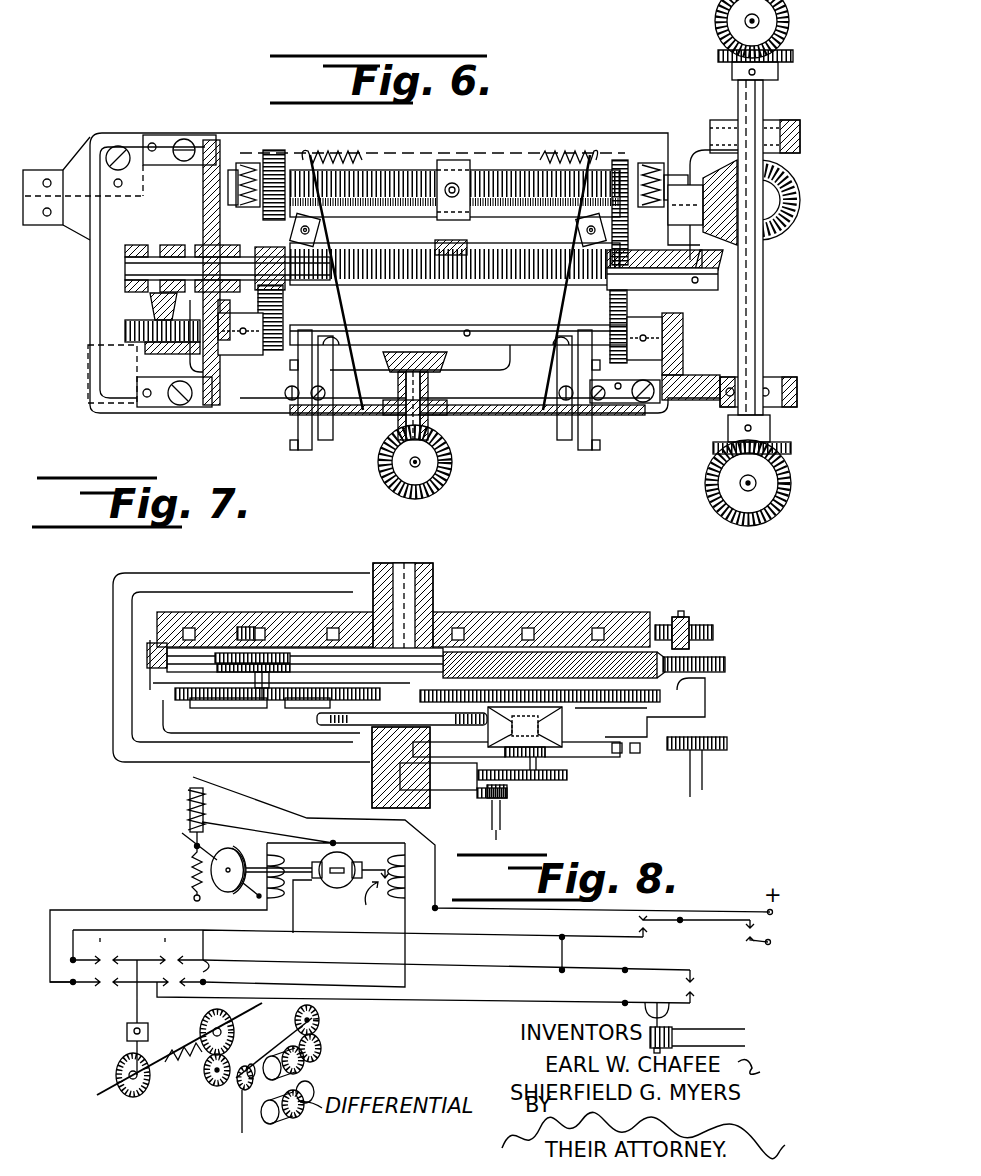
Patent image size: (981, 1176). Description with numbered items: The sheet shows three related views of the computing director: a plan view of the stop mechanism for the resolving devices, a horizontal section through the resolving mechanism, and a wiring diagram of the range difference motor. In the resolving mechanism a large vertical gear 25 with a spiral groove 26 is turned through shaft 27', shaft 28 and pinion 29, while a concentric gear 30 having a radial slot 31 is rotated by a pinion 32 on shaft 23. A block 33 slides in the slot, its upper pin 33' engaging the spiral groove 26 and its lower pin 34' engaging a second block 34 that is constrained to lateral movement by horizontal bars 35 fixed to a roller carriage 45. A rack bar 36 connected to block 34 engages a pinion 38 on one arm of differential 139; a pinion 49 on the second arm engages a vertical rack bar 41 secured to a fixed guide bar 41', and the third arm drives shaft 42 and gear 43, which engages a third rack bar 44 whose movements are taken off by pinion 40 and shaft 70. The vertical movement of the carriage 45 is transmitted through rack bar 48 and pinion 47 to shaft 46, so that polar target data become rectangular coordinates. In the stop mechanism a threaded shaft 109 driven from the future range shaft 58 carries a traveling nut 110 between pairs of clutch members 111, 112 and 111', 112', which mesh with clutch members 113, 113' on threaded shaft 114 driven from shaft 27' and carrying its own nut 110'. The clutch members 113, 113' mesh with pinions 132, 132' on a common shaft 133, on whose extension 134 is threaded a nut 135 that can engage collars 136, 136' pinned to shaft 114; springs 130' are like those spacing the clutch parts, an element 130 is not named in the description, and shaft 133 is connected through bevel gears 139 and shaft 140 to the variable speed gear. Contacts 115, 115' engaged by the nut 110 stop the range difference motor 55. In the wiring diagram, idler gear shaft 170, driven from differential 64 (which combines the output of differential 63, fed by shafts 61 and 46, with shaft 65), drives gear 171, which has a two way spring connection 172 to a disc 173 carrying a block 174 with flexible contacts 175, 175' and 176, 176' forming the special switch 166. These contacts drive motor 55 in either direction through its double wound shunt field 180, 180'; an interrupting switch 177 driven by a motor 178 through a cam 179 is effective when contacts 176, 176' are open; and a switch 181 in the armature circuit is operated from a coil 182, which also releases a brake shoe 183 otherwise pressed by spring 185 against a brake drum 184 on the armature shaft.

In FIG. 6, the bracket plate 130 is at (188, 249).
In FIG. 6, the clutch member 112' is at (252, 157).
In FIG. 6, the clutch member 111' is at (278, 154).
In FIG. 6, the threaded shaft 109 is at (366, 208).
In FIG. 6, the nut 110 is at (468, 157).
In FIG. 6, the threaded shaft 114 is at (525, 262).
In FIG. 6, the traveling nut 110' is at (474, 238).
In FIG. 6, the clutch member 112 is at (640, 185).
In FIG. 6, the clutch member 111 is at (640, 150).
In FIG. 6, the collar 136 is at (216, 254).
In FIG. 6, the collar 136' is at (200, 252).
In FIG. 6, the springs 130' is at (479, 312).
In FIG. 6, the pinion 132' is at (250, 329).
In FIG. 6, the nut 135 is at (150, 305).
In FIG. 6, the extension of shaft 133 134 is at (132, 350).
In FIG. 6, the common shaft 133 is at (388, 328).
In FIG. 6, the clutch member 113' is at (282, 316).
In FIG. 6, the shaft 140 is at (410, 468).
In FIG. 6, the contact 115' is at (324, 401).
In FIG. 8, the contact 115' is at (750, 932).
In FIG. 6, the contact 115 is at (573, 400).
In FIG. 8, the contact 115 is at (669, 929).
In FIG. 6, the clutch member 113 is at (640, 306).
In FIG. 6, the pinion 132 is at (650, 397).
In FIG. 6, the range shaft 58 is at (762, 193).
In FIG. 6, the shaft 27' is at (725, 263).
In FIG. 7, the spiral groove 26 is at (522, 626).
In FIG. 7, the fixed guide bar 41' is at (377, 685).
In FIG. 7, the disc or gear 30 is at (593, 655).
In FIG. 7, the radial slot 31 is at (180, 650).
In FIG. 7, the upper pin 33' is at (274, 593).
In FIG. 7, the block 33 is at (236, 627).
In FIG. 7, the block 34 is at (230, 695).
In FIG. 7, the lower pin 34' is at (241, 699).
In FIG. 7, the horizontal bar 35 is at (153, 685).
In FIG. 7, the rack bar 36 is at (302, 700).
In FIG. 7, the roller carriage 45 is at (262, 676).
In FIG. 7, the vertical rack bar 41 is at (468, 751).
In FIG. 7, the pinion 38 is at (562, 712).
In FIG. 7, the pinion 49 is at (545, 752).
In FIG. 7, the gear 43 is at (566, 776).
In FIG. 7, the shaft 42 is at (522, 757).
In FIG. 7, the differential 139 is at (545, 760).
In FIG. 7, the rack bar 48 is at (658, 740).
In FIG. 7, the pinion 47 is at (703, 755).
In FIG. 7, the shaft 46 is at (692, 782).
In FIG. 7, the shaft 23 is at (706, 686).
In FIG. 7, the pinion 29 is at (712, 630).
In FIG. 7, the disc or gear 25 is at (682, 617).
In FIG. 7, the shaft 28 is at (690, 620).
In FIG. 7, the pinion 32 is at (726, 666).
In FIG. 7, the rack bar 44 is at (478, 790).
In FIG. 7, the shaft 70 is at (490, 816).
In FIG. 7, the pinion 40 is at (507, 814).
In FIG. 8, the coil 182 is at (205, 806).
In FIG. 8, the spring 185 is at (192, 866).
In FIG. 8, the brake shoe 183 is at (228, 848).
In FIG. 8, the brake drum 184 is at (262, 892).
In FIG. 8, the shunt field 180 is at (299, 870).
In FIG. 8, the range difference motor 55 is at (335, 888).
In FIG. 8, the shunt field 180' is at (385, 870).
In FIG. 8, the switch 181 is at (366, 905).
In FIG. 8, the flexible contact 176 is at (103, 945).
In FIG. 8, the flexible contact 176' is at (181, 945).
In FIG. 8, the flexible contact 175' is at (234, 953).
In FIG. 8, the flexible contact 175 is at (58, 995).
In FIG. 8, the special switch 166 is at (127, 1025).
In FIG. 8, the block 174 is at (127, 1038).
In FIG. 8, the disc 173 is at (126, 1098).
In FIG. 8, the two way spring connection 172 is at (204, 1078).
In FIG. 8, the gear 171 is at (205, 1020).
In FIG. 8, the idler gear shaft 170 is at (268, 1045).
In FIG. 8, the differential 64 is at (322, 1048).
In FIG. 8, the shaft 61 is at (316, 1094).
In FIG. 8, the differential 63 is at (297, 1118).
In FIG. 8, the shaft 65 is at (240, 1123).
In FIG. 8, the circuit interrupting switch 177 is at (694, 992).
In FIG. 8, the cam 179 is at (670, 1012).
In FIG. 8, the motor 178 is at (672, 1040).